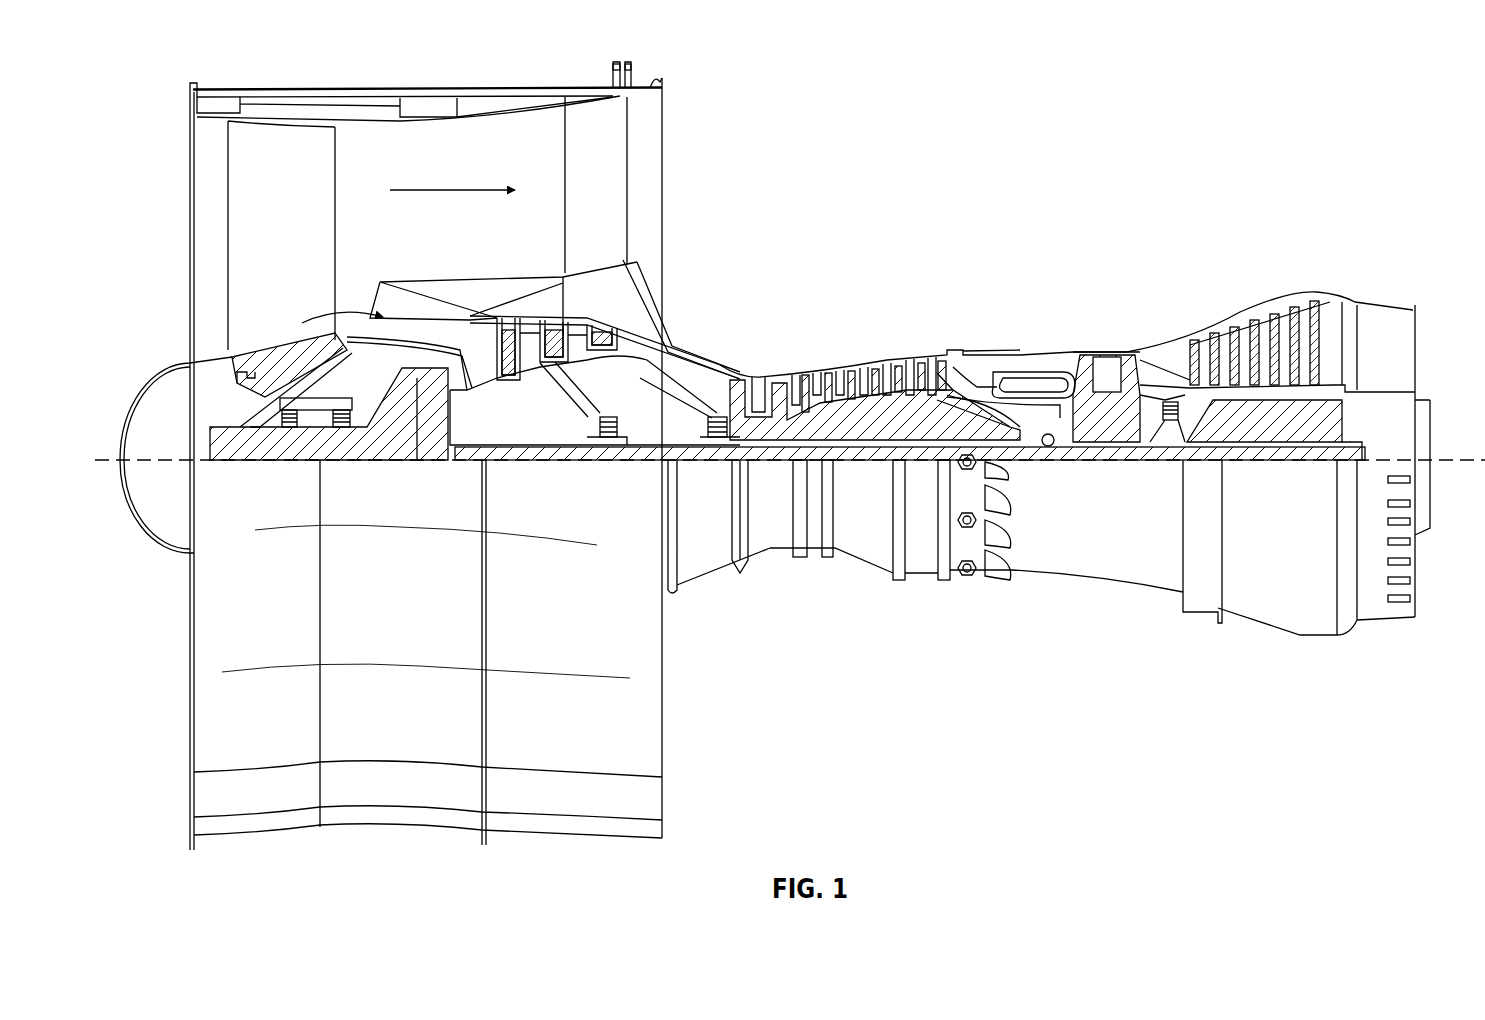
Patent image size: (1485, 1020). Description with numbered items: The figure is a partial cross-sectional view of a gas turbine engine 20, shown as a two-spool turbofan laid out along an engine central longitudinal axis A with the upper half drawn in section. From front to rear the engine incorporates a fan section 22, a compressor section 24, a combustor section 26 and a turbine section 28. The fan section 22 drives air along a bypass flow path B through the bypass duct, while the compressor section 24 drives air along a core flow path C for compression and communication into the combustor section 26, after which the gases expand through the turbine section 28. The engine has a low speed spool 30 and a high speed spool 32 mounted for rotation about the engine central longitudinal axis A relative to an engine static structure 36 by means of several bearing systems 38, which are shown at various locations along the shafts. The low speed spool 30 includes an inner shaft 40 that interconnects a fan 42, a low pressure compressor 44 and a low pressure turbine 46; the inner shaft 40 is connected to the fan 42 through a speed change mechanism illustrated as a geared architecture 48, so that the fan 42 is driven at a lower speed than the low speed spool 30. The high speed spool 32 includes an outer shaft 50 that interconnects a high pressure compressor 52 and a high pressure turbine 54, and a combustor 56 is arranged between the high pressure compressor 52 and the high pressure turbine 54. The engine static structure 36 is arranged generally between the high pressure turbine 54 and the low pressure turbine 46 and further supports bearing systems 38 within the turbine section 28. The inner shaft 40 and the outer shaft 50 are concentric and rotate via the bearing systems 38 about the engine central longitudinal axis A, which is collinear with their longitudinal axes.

The gas turbine engine 20 is at (1233, 126).
The fan section 22 is at (300, 83).
The compressor section 24 is at (923, 346).
The combustor section 26 is at (1011, 335).
The turbine section 28 is at (1271, 346).
The low speed spool 30 is at (885, 463).
The high speed spool 32 is at (940, 397).
The engine static structure 36 is at (925, 580).
The bearing systems 38 is at (297, 422).
The inner shaft 40 is at (677, 455).
The fan 42 is at (304, 213).
The low pressure compressor 44 is at (583, 333).
The low pressure turbine 46 is at (1270, 317).
The geared architecture 48 is at (430, 425).
The outer shaft 50 is at (1048, 446).
The high pressure compressor 52 is at (843, 430).
The high pressure turbine 54 is at (1105, 355).
The combustor 56 is at (1027, 377).
The engine central longitudinal axis A is at (1440, 448).
The bypass flow path B is at (455, 190).
The core flow path C is at (317, 320).